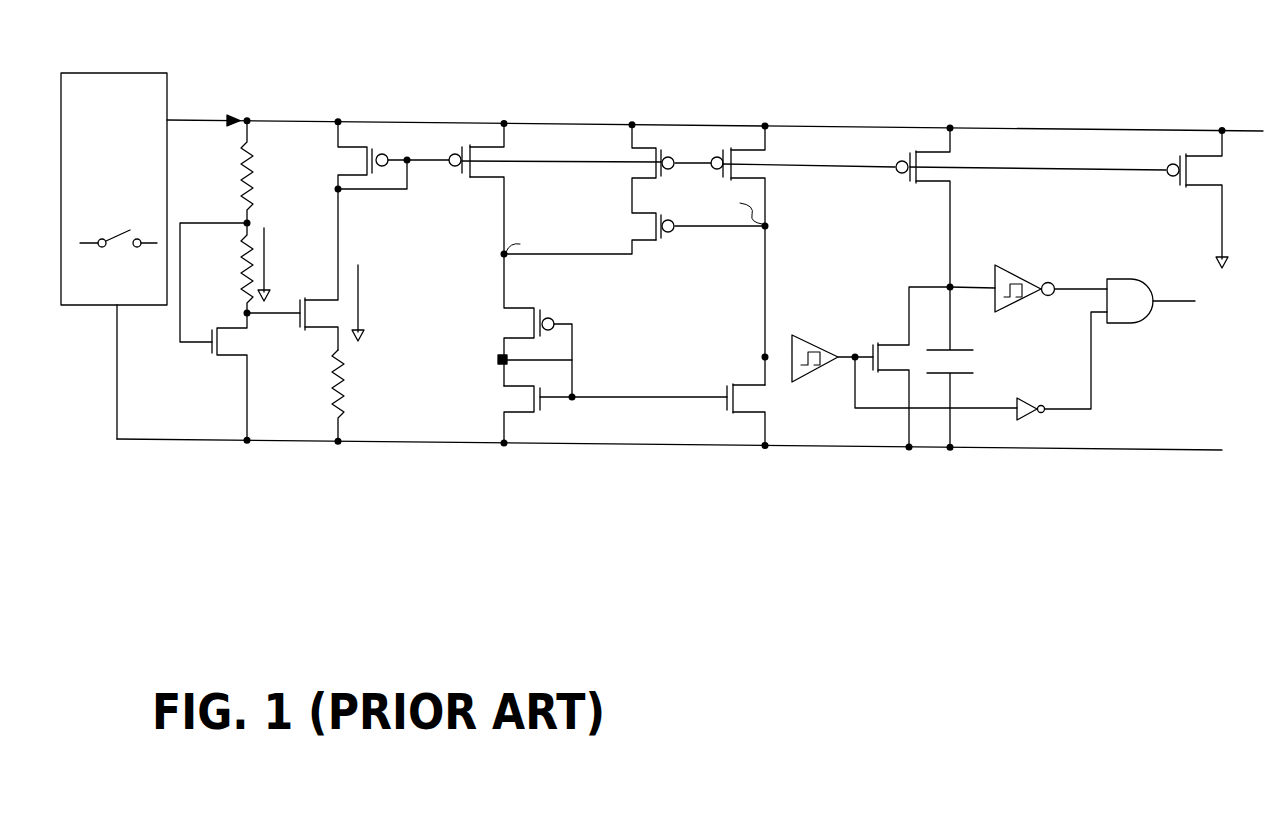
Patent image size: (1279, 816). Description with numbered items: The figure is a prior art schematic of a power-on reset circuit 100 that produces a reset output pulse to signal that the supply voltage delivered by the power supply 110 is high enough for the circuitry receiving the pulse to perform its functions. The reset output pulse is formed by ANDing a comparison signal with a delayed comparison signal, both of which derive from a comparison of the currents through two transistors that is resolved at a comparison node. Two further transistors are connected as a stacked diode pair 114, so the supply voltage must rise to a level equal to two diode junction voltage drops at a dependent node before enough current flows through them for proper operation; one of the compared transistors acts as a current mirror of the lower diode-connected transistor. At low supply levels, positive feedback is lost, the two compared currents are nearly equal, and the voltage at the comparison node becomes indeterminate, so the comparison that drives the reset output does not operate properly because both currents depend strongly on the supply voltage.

The power-on reset circuit 100 is at (1000, 57).
The power supply 110 is at (132, 174).
The stacked diode pair 114 is at (592, 324).